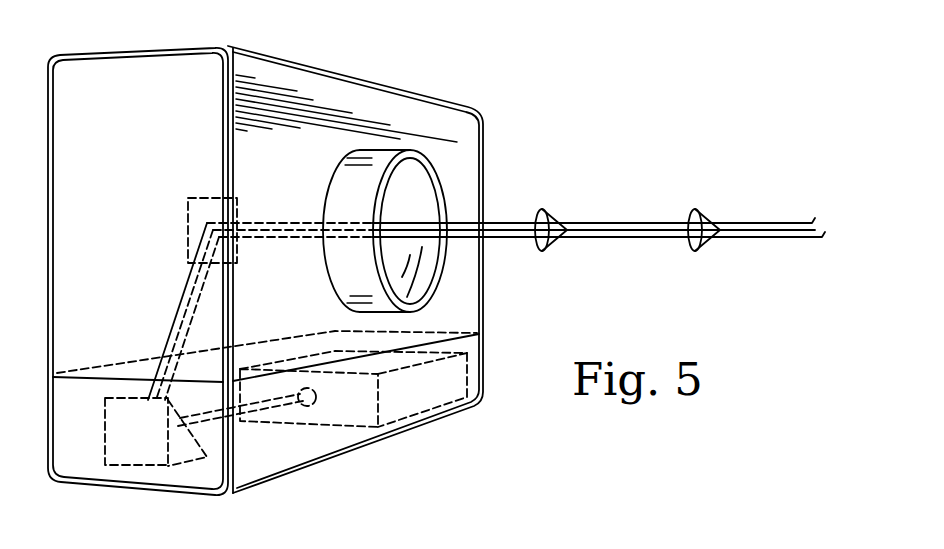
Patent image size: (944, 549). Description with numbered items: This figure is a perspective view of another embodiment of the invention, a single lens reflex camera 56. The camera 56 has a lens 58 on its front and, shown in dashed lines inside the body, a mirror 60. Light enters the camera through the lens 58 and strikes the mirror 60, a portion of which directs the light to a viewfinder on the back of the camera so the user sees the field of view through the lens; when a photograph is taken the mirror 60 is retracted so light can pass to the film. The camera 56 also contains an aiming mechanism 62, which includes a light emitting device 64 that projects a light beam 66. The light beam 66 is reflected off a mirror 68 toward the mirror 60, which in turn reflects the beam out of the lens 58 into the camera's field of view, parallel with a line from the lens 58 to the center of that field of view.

The single lens reflex camera 56 is at (372, 58).
The lens 58 is at (410, 198).
The mirror 60 is at (187, 217).
The aiming mechanism 62 is at (250, 462).
The light emitting device 64 is at (448, 379).
The light beam 66 is at (600, 240).
The mirror 68 is at (160, 461).